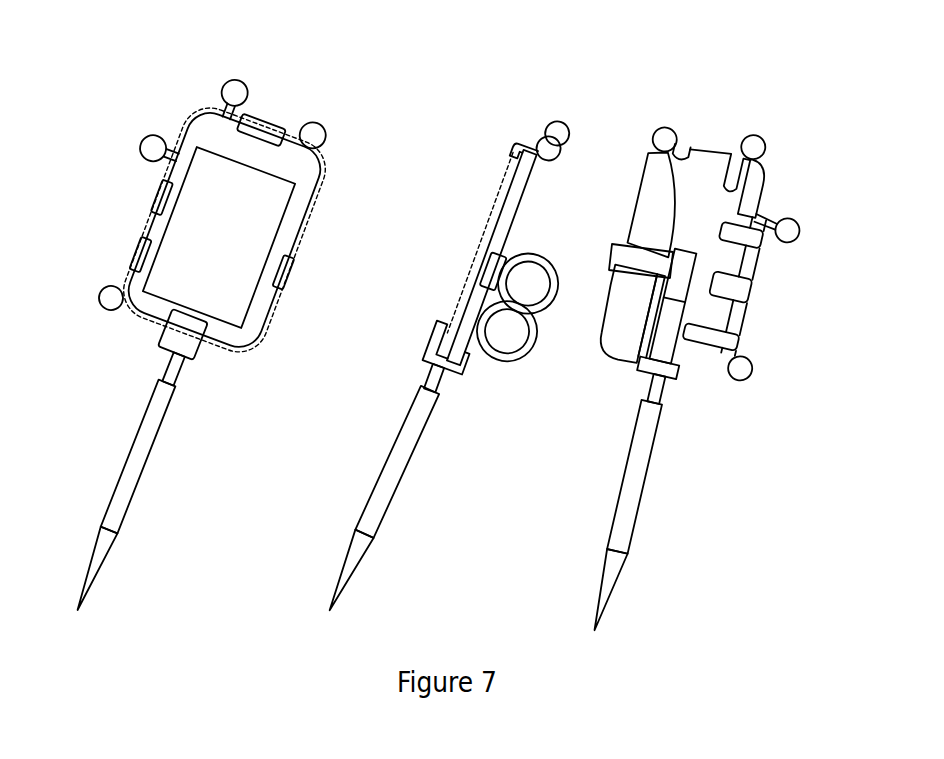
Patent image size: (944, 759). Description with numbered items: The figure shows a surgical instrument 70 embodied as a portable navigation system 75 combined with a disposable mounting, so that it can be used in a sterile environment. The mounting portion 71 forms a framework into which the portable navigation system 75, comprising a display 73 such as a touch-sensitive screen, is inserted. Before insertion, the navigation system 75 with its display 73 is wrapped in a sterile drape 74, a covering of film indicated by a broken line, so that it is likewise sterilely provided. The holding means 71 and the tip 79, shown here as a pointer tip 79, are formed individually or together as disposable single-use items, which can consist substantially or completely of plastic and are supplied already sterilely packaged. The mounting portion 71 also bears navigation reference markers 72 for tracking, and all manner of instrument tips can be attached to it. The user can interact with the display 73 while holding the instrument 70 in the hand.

The surgical instrument 70 is at (172, 124).
The mounting portion 71 is at (177, 325).
The reference markers 72 is at (753, 375).
The display 73 is at (233, 283).
The sterile drape 74 is at (313, 185).
The portable navigation system 75 is at (228, 345).
The pointer tip 79 is at (142, 455).